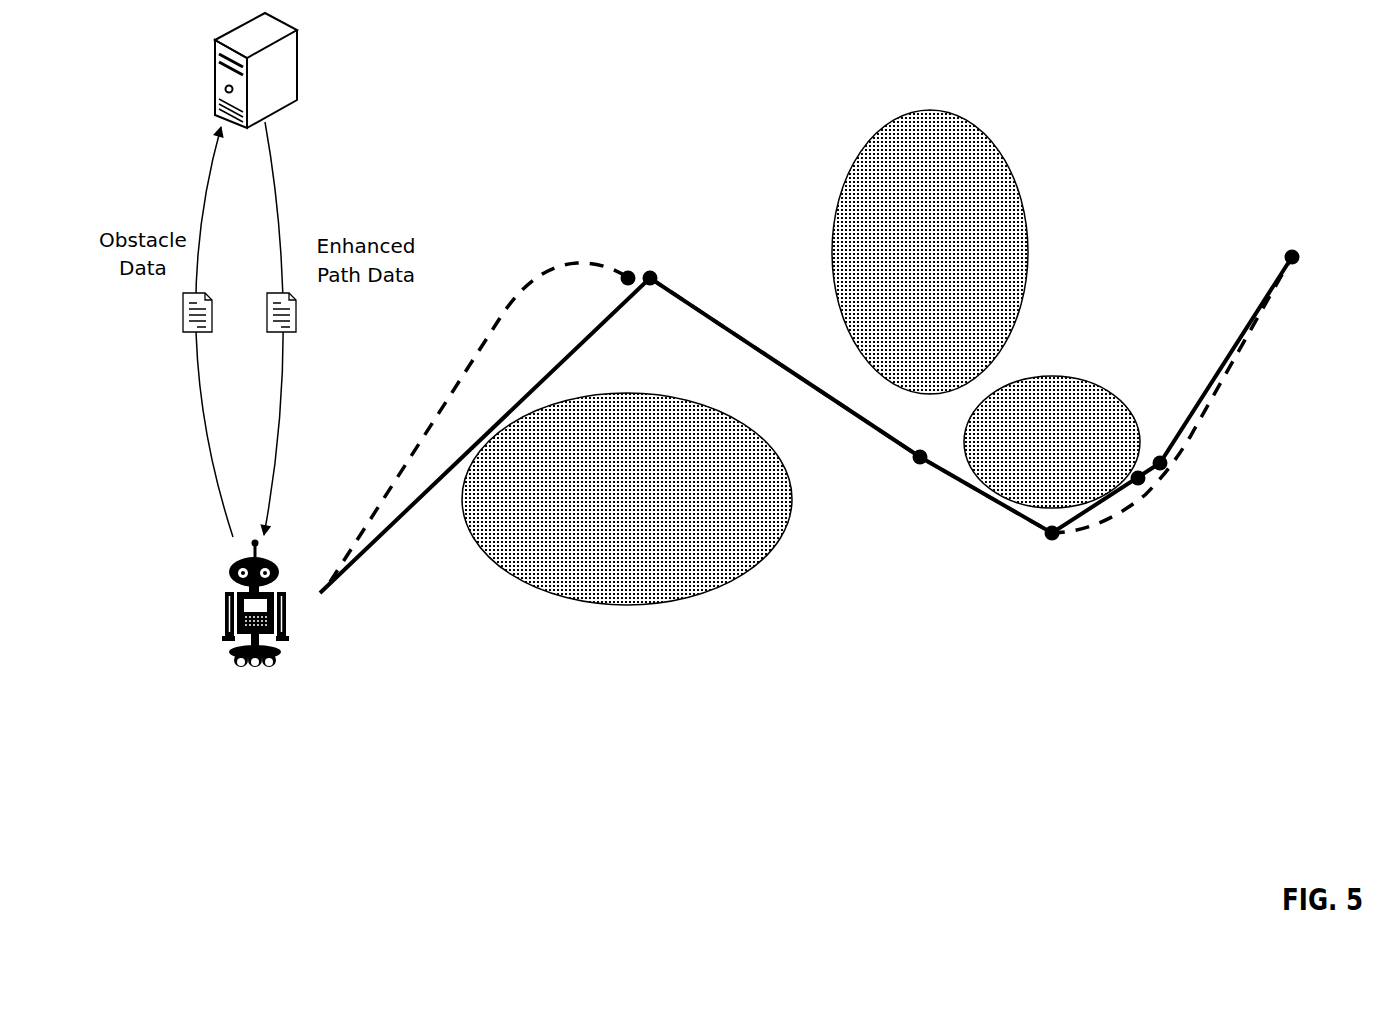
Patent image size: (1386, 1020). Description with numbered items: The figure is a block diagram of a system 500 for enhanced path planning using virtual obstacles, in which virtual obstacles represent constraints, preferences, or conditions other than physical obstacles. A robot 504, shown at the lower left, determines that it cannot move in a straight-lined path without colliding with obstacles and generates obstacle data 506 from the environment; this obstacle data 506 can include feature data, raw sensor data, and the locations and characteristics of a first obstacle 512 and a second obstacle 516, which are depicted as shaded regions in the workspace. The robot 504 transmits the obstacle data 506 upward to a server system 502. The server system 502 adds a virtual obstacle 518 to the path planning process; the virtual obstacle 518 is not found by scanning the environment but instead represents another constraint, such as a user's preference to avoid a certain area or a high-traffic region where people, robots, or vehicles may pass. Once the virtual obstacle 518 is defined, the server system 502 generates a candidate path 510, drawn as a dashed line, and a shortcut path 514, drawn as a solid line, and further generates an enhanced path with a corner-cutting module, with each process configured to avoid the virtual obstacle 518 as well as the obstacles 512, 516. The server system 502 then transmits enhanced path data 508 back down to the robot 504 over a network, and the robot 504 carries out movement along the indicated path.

The system 500 is at (204, 744).
The server system 502 is at (216, 60).
The robot 504 is at (232, 566).
The obstacle data 506 is at (183, 325).
The enhanced path data 508 is at (273, 293).
The candidate path 510 is at (440, 400).
The obstacle 512 is at (627, 499).
The shortcut path 514 is at (716, 327).
The obstacle 516 is at (930, 252).
The virtual obstacle 518 is at (1077, 378).